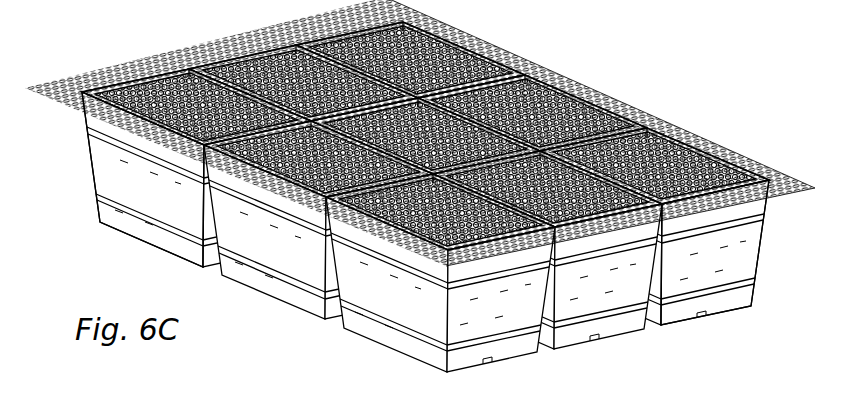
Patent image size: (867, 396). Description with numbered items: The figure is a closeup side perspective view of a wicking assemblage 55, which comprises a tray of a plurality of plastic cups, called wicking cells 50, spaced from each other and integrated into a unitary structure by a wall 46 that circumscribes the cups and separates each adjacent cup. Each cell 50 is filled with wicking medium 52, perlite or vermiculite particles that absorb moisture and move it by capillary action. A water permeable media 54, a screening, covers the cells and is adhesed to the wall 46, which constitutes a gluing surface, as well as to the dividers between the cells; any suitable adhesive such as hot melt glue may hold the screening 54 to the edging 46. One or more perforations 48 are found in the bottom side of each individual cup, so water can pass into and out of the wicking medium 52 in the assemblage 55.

The wall 46 is at (157, 58).
The perforations 48 is at (707, 318).
The wicking cells 50 is at (133, 219).
The wicking medium 52 is at (677, 157).
The water permeable media 54 is at (783, 190).
The wicking assemblage 55 is at (286, 312).